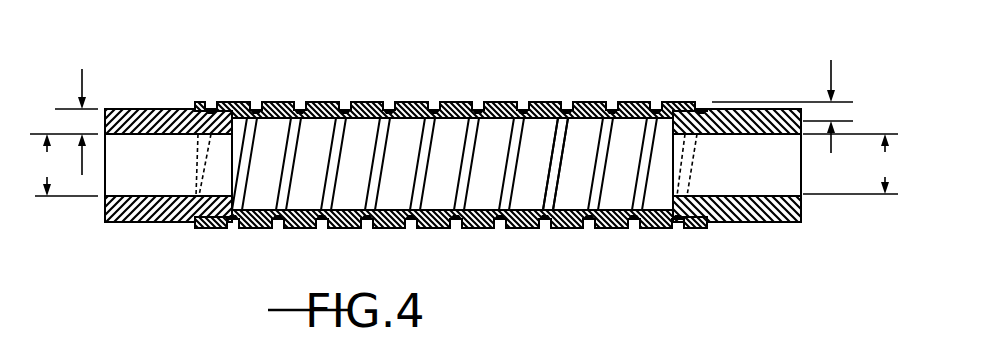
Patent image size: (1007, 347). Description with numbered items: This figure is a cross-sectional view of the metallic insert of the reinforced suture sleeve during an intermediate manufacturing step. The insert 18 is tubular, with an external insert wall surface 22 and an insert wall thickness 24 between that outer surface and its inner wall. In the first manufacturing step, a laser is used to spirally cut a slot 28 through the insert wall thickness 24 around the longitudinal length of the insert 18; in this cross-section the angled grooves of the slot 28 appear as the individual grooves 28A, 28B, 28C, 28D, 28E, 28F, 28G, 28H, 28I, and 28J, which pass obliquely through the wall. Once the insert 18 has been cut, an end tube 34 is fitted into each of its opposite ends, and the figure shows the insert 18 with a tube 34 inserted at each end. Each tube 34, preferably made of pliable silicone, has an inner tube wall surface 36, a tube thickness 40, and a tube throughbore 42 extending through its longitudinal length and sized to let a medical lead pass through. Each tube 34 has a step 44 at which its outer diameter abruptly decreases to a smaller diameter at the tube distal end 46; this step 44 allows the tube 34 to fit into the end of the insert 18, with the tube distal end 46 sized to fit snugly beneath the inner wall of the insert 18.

The insert 18 is at (380, 230).
The external insert wall surface 22 is at (601, 228).
The insert wall thickness 24 is at (828, 93).
The slot 28 is at (552, 180).
The angled groove 28A is at (255, 107).
The angled groove 28B is at (299, 107).
The angled groove 28C is at (345, 107).
The angled groove 28D is at (389, 107).
The angled groove 28E is at (433, 107).
The angled groove 28F is at (478, 107).
The angled groove 28G is at (523, 107).
The angled groove 28H is at (567, 107).
The angled groove 28I is at (612, 107).
The angled groove 28J is at (656, 107).
The end tube 34 is at (127, 222).
The inner tube wall surface 36 is at (170, 136).
The tube thickness 40 is at (76, 108).
The tube throughbore 42 is at (464, 165).
The step 44 is at (197, 108).
The tube distal end 46 is at (727, 109).